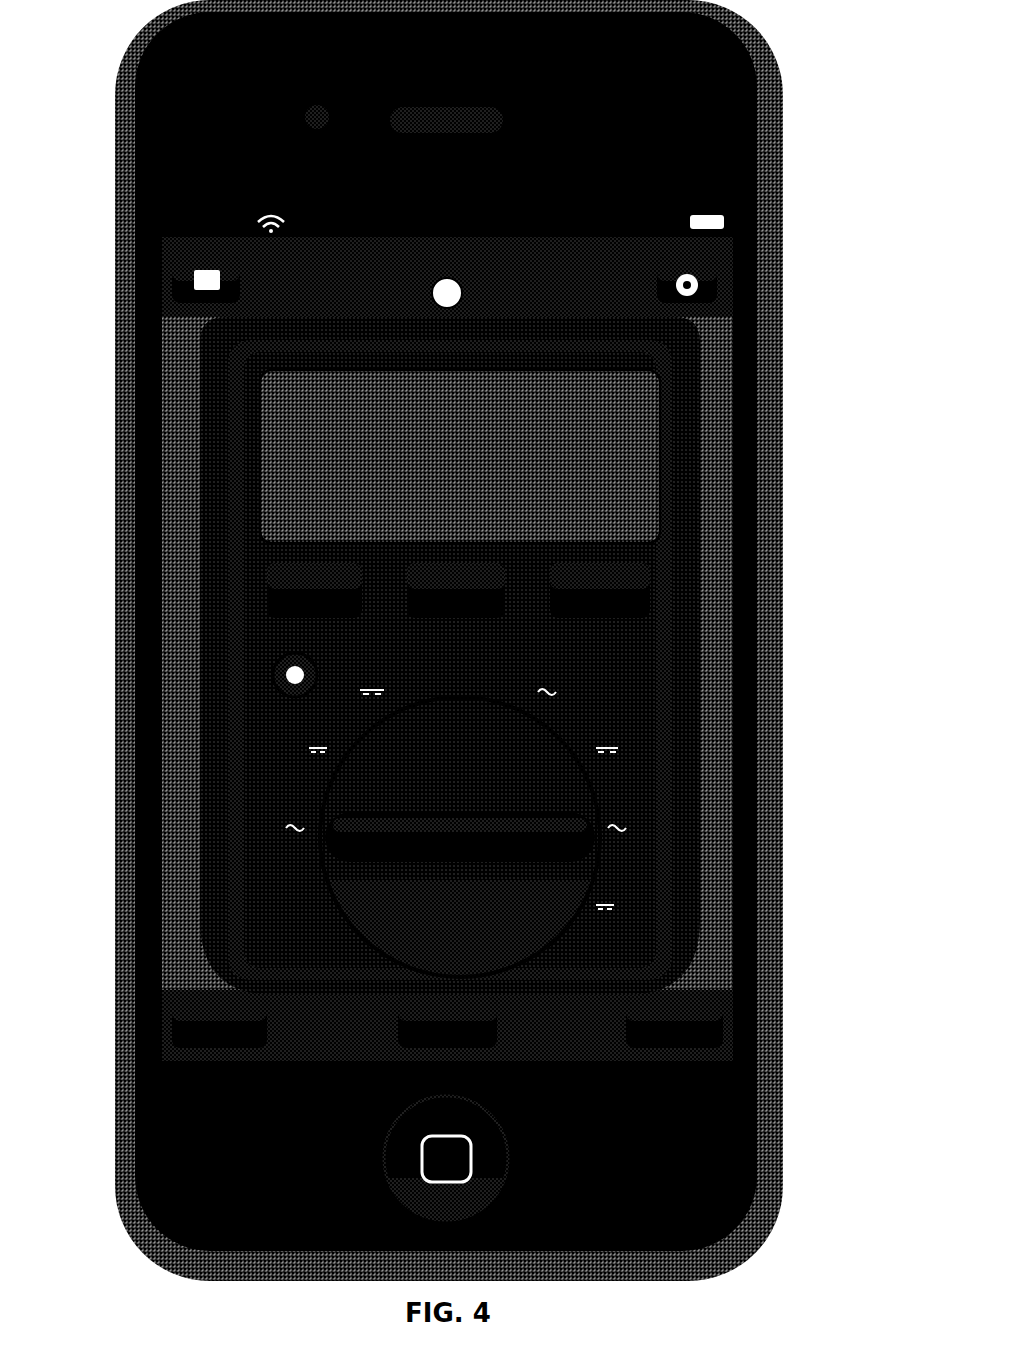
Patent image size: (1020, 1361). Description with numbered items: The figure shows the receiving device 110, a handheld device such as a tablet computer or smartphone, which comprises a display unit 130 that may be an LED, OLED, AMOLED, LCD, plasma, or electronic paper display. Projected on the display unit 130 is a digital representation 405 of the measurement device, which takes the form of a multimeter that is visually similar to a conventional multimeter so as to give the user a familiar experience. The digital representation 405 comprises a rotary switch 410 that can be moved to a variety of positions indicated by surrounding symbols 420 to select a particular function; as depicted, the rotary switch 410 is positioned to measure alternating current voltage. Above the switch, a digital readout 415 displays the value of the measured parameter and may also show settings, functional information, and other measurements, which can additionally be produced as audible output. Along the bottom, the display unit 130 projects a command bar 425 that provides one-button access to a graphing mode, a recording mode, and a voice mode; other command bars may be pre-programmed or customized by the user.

The receiving device 110 is at (437, 640).
The display unit 130 is at (437, 634).
The digital representation 405 is at (429, 656).
The rotary switch 410 is at (322, 798).
The digital readout 415 is at (272, 509).
The symbols 420 is at (596, 670).
The command bar 425 is at (680, 972).